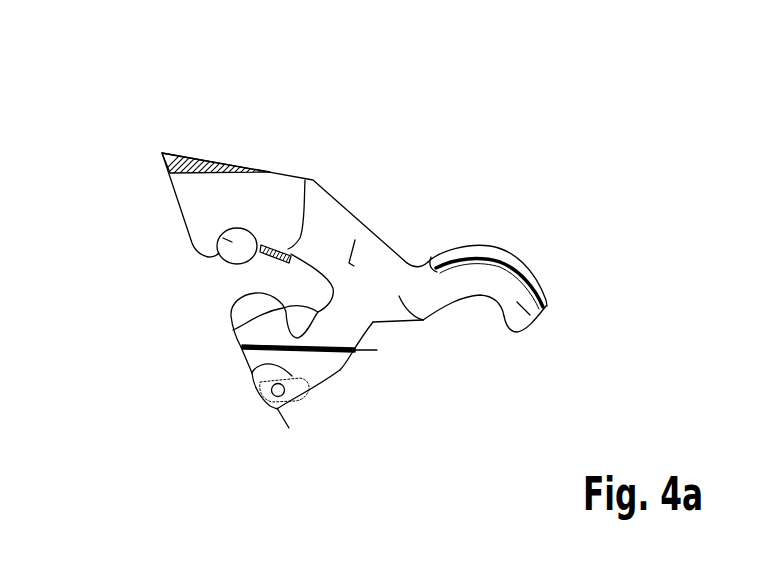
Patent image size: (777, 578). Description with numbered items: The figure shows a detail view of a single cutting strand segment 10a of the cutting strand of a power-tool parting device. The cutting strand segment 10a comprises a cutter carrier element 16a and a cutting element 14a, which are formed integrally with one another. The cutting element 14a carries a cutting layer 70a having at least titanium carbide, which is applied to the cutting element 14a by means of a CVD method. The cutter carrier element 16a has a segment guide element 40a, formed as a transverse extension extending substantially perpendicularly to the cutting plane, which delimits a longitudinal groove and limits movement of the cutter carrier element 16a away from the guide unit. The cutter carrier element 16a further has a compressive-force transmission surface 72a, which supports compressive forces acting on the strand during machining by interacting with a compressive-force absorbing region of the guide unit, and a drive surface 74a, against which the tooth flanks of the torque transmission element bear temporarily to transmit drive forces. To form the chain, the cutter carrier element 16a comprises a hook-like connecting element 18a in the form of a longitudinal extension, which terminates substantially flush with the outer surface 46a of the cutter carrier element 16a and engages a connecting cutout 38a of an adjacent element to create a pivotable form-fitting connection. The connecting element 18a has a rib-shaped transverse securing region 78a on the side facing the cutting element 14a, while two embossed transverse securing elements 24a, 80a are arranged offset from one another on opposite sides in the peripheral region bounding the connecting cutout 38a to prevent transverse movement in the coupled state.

The cutting strand segment 10a is at (101, 52).
The cutting element 14a is at (263, 172).
The cutter carrier element 16a is at (423, 320).
The connecting element 18a is at (537, 316).
The transverse securing element 24a is at (193, 244).
The connecting cutout 38a is at (233, 331).
The segment guide element 40a is at (241, 372).
The outer surface 46a is at (350, 264).
The cutting layer 70a is at (186, 152).
The compressive-force transmission surface 72a is at (277, 408).
The drive surface 74a is at (355, 350).
The transverse securing region 78a is at (522, 258).
The transverse securing element 80a is at (305, 180).